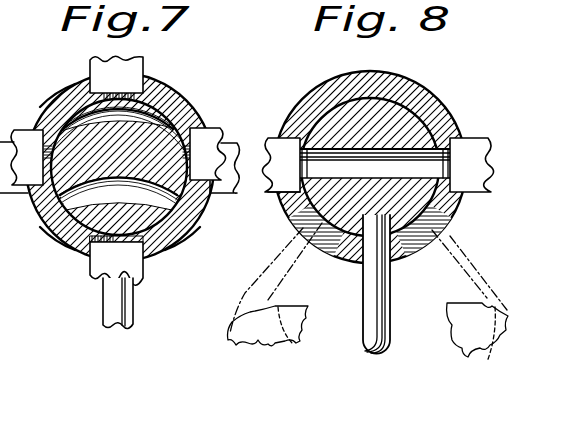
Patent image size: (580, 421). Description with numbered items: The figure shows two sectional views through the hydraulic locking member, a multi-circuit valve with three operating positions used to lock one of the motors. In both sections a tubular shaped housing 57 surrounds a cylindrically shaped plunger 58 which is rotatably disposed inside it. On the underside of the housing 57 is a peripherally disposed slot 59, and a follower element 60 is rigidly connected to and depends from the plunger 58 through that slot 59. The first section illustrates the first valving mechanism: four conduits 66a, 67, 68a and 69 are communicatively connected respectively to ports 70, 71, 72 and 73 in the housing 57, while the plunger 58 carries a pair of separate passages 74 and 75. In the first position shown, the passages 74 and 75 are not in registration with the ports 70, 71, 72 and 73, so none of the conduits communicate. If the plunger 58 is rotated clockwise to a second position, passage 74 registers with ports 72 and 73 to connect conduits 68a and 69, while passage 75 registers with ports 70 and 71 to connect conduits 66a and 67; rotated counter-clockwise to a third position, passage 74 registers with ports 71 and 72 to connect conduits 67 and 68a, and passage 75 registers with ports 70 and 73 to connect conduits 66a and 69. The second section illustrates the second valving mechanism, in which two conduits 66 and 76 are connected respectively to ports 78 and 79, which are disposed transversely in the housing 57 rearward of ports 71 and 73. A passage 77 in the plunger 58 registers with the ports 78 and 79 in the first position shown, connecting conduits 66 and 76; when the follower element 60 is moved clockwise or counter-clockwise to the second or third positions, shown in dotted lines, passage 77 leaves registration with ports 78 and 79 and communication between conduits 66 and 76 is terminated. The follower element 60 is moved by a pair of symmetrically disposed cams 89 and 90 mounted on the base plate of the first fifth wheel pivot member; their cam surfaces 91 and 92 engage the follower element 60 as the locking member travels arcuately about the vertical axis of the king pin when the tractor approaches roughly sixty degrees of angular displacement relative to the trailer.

In FIG. 7, the tubular shaped housing 57 is at (160, 85).
In FIG. 8, the tubular shaped housing 57 is at (398, 92).
In FIG. 7, the cylindrically shaped plunger 58 is at (147, 262).
In FIG. 8, the cylindrically shaped plunger 58 is at (396, 114).
In FIG. 8, the peripherally disposed slot 59 is at (340, 248).
In FIG. 7, the follower element 60 is at (105, 311).
In FIG. 8, the follower element 60 is at (275, 268).
In FIG. 8, the conduit 66 is at (476, 193).
In FIG. 7, the conduit 66a is at (133, 65).
In FIG. 7, the conduit 67 is at (208, 129).
In FIG. 7, the conduit 68a is at (92, 278).
In FIG. 7, the conduit 69 is at (20, 132).
In FIG. 7, the port 70 is at (67, 91).
In FIG. 7, the port 71 is at (221, 194).
In FIG. 7, the port 72 is at (88, 265).
In FIG. 7, the port 73 is at (45, 210).
In FIG. 7, the passage 74 is at (207, 222).
In FIG. 7, the passage 75 is at (147, 115).
In FIG. 8, the conduit 76 is at (276, 147).
In FIG. 8, the passage 77 is at (333, 155).
In FIG. 8, the port 78 is at (450, 153).
In FIG. 8, the port 79 is at (285, 188).
In FIG. 8, the cam 89 is at (487, 362).
In FIG. 8, the cam 90 is at (253, 356).
In FIG. 8, the cam surface 91 is at (462, 350).
In FIG. 8, the cam surface 92 is at (287, 338).